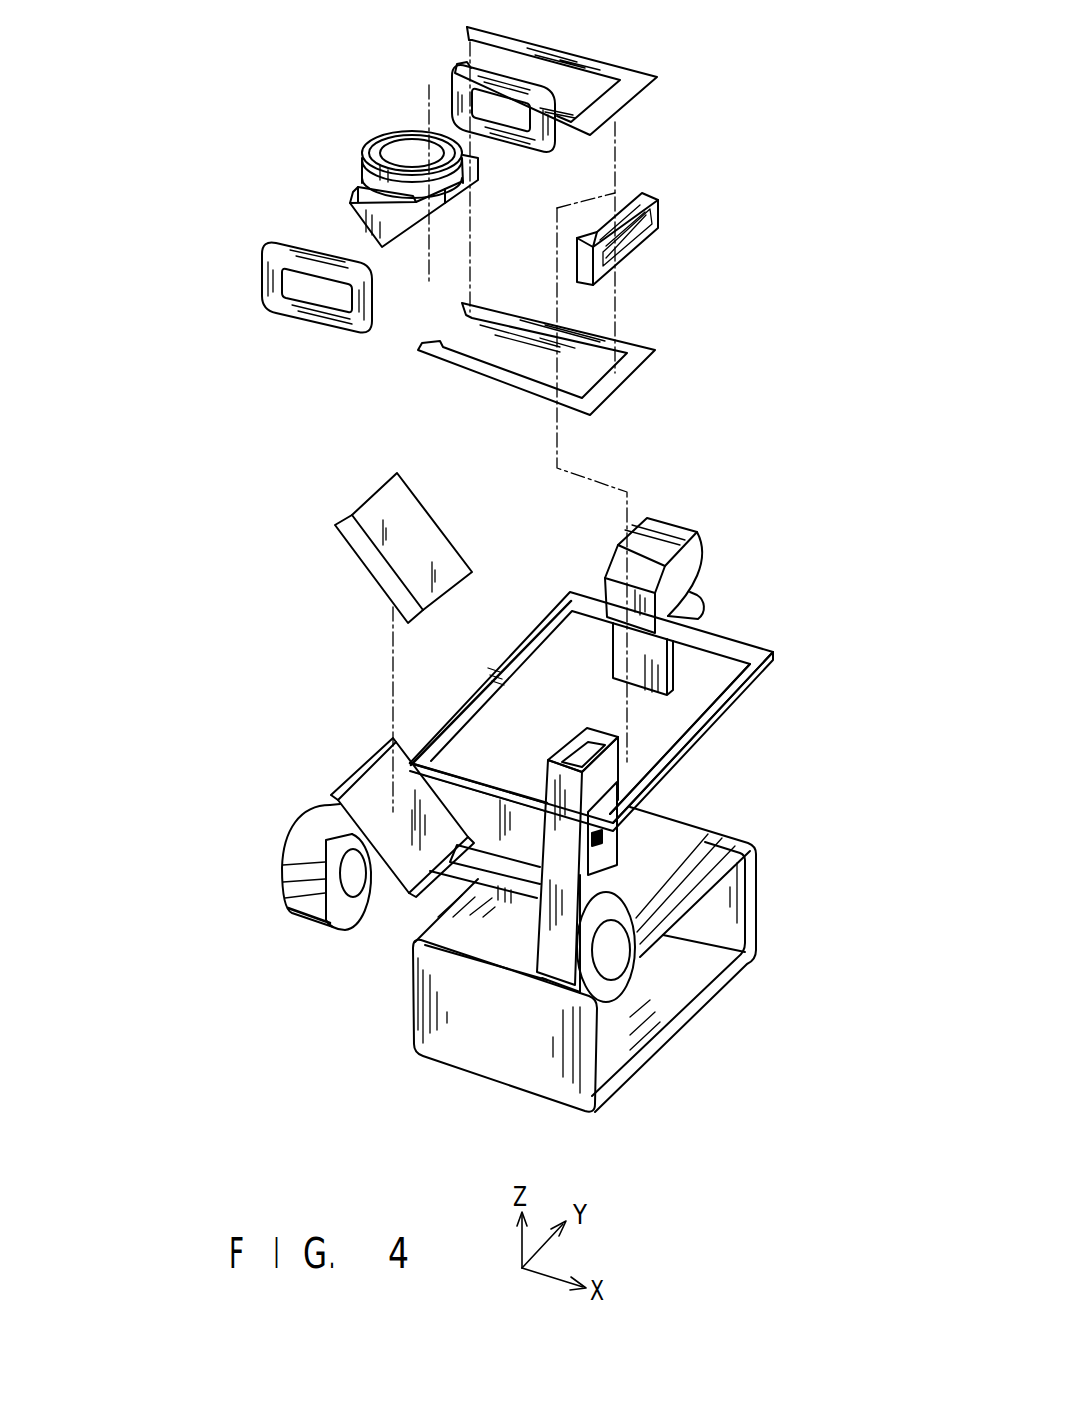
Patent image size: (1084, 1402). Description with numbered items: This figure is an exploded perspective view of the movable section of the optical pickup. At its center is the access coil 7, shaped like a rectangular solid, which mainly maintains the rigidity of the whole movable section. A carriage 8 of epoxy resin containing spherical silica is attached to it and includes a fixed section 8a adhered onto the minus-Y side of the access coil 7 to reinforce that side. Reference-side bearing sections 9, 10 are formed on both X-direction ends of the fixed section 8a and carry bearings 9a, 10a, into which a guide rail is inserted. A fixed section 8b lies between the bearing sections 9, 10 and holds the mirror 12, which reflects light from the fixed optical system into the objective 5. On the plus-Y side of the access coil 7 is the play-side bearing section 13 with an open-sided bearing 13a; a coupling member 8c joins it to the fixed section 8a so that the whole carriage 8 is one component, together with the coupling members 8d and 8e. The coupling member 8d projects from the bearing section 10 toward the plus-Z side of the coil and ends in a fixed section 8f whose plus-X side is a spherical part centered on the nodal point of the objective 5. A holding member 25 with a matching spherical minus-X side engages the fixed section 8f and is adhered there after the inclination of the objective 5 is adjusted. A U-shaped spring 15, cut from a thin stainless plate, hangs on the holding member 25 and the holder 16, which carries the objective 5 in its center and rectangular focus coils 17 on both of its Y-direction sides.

The objective 5 is at (392, 148).
The access coil 7 is at (758, 900).
The carriage 8 is at (622, 711).
The fixed section 8a is at (442, 887).
The fixed section 8b is at (358, 785).
The coupling member 8c is at (705, 723).
The coupling member 8d is at (548, 895).
The coupling member 8e is at (607, 842).
The fixed section 8f is at (562, 765).
The reference-side bearing section 9 is at (290, 862).
The bearing 9a is at (350, 880).
The reference-side bearing section 10 is at (553, 980).
The bearing 10a is at (610, 960).
The mirror 12 is at (362, 548).
The play-side bearing section 13 is at (697, 545).
The bearing 13a is at (680, 607).
The spring 15 is at (597, 58).
The holder 16 is at (362, 160).
The focus coils 17 is at (527, 152).
The holding member 25 is at (642, 243).